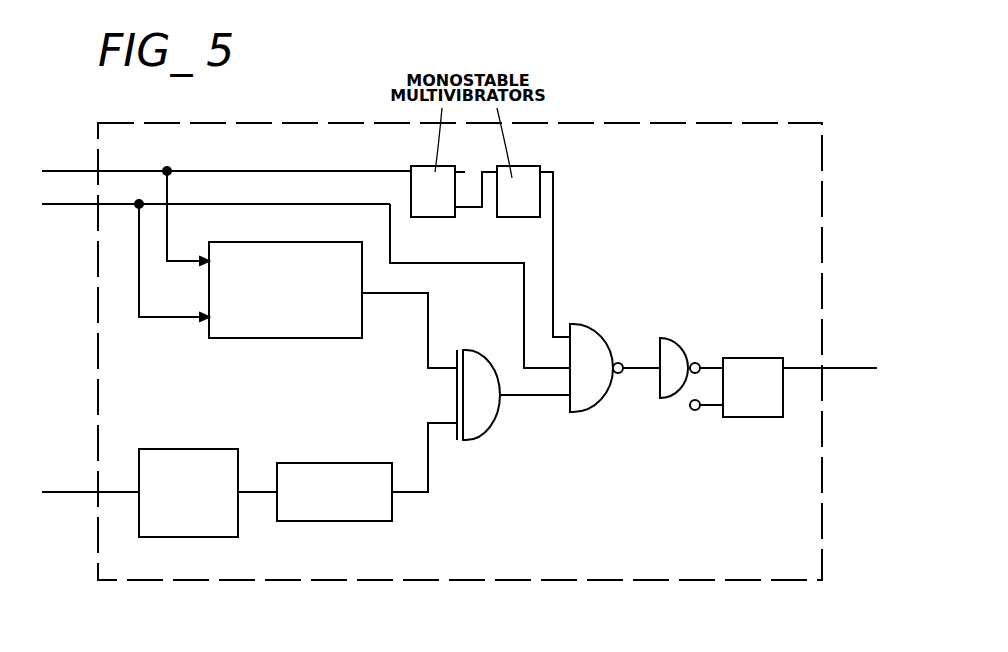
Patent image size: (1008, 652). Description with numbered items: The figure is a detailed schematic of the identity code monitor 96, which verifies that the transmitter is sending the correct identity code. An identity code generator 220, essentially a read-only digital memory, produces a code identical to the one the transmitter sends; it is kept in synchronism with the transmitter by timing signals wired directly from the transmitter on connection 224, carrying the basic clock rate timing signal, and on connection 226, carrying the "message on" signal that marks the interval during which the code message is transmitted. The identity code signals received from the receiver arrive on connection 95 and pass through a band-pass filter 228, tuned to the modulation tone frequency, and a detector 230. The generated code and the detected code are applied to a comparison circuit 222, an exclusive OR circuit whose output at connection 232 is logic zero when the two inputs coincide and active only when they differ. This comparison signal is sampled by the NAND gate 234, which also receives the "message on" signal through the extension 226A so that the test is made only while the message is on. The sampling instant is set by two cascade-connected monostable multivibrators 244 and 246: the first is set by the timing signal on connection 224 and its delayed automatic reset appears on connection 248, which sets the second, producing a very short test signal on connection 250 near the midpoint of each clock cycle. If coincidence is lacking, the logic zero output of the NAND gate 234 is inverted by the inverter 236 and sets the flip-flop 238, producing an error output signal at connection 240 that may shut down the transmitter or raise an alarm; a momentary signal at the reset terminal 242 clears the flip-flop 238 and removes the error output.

The identity code monitor 96 is at (682, 123).
The connection 224 is at (86, 170).
The connection 226 is at (84, 206).
The monostable multivibrator 244 is at (422, 166).
The monostable multivibrator 246 is at (531, 166).
The connection 248 is at (470, 212).
The connection 250 is at (554, 242).
The extension of circuit 226 226A is at (446, 264).
The identity code generator 220 is at (302, 340).
The comparison circuit 222 is at (484, 440).
The connection 232 is at (530, 396).
The NAND gate 234 is at (596, 325).
The inverter 236 is at (680, 339).
The flip-flop 238 is at (756, 358).
The connection 240 is at (838, 369).
The reset terminal 242 is at (694, 411).
The band-pass filter 228 is at (188, 449).
The detector 230 is at (330, 463).
The connection 95 is at (76, 491).